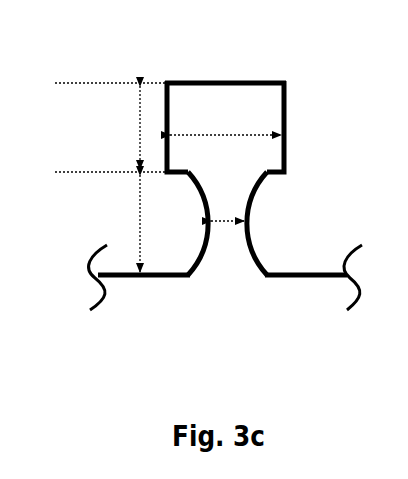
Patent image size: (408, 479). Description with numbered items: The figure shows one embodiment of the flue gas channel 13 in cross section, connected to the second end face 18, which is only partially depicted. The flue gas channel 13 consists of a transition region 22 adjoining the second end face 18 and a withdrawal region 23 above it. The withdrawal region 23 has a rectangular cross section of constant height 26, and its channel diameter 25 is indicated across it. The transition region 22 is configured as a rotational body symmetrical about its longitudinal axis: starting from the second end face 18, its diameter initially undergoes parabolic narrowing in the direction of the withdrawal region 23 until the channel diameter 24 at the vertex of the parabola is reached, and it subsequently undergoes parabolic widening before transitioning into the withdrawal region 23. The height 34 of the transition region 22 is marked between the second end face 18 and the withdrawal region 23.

The flue gas channel 13 is at (224, 81).
The second end face 18 is at (165, 278).
The transition region 22 is at (303, 175).
The withdrawal region 23 is at (301, 85).
The channel diameter of the transition region 24 is at (223, 222).
The channel diameter of the withdrawal region 25 is at (236, 135).
The height of the withdrawal region 26 is at (140, 135).
The height of the transition region 34 is at (140, 243).